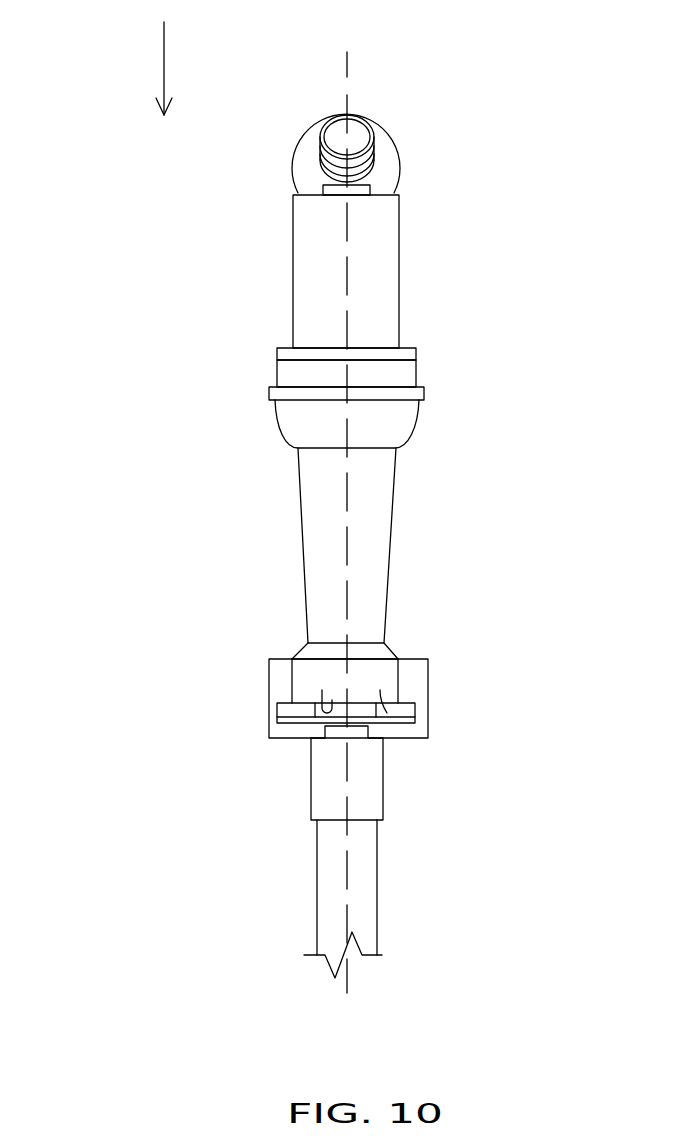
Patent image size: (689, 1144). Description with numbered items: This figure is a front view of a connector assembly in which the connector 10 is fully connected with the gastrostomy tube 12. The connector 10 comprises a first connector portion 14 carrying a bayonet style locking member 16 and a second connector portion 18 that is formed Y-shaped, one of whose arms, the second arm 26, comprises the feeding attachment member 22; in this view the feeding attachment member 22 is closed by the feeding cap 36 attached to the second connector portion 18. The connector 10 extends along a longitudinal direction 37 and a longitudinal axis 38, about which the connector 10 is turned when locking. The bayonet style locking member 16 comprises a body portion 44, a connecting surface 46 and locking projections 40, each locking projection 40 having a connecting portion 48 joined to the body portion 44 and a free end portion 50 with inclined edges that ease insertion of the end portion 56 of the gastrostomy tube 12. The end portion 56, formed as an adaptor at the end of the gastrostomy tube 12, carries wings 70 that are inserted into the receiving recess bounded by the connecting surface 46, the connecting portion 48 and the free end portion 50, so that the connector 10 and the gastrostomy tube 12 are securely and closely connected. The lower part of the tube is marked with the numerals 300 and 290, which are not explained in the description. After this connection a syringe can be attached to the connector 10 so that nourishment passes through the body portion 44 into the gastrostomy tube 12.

The connector 10 is at (540, 120).
The gastrostomy tube 12 is at (378, 888).
The first connector portion 14 is at (473, 608).
The bayonet style locking member 16 is at (245, 690).
The second connector portion 18 is at (485, 260).
The feeding attachment member 22 is at (398, 188).
The second arm 26 is at (416, 378).
The feeding cap 36 is at (395, 137).
The longitudinal direction 37 is at (164, 45).
The longitudinal axis 38 is at (348, 70).
The locking projection 40 is at (430, 720).
The body portion 44 is at (417, 678).
The connecting surface 46 is at (322, 686).
The connecting portion 48 is at (269, 727).
The free end portion 50 is at (306, 740).
The end portion 56 is at (383, 780).
The wing 70 is at (382, 686).
The proximal portion 290 is at (349, 920).
The distal portion 300 is at (349, 845).